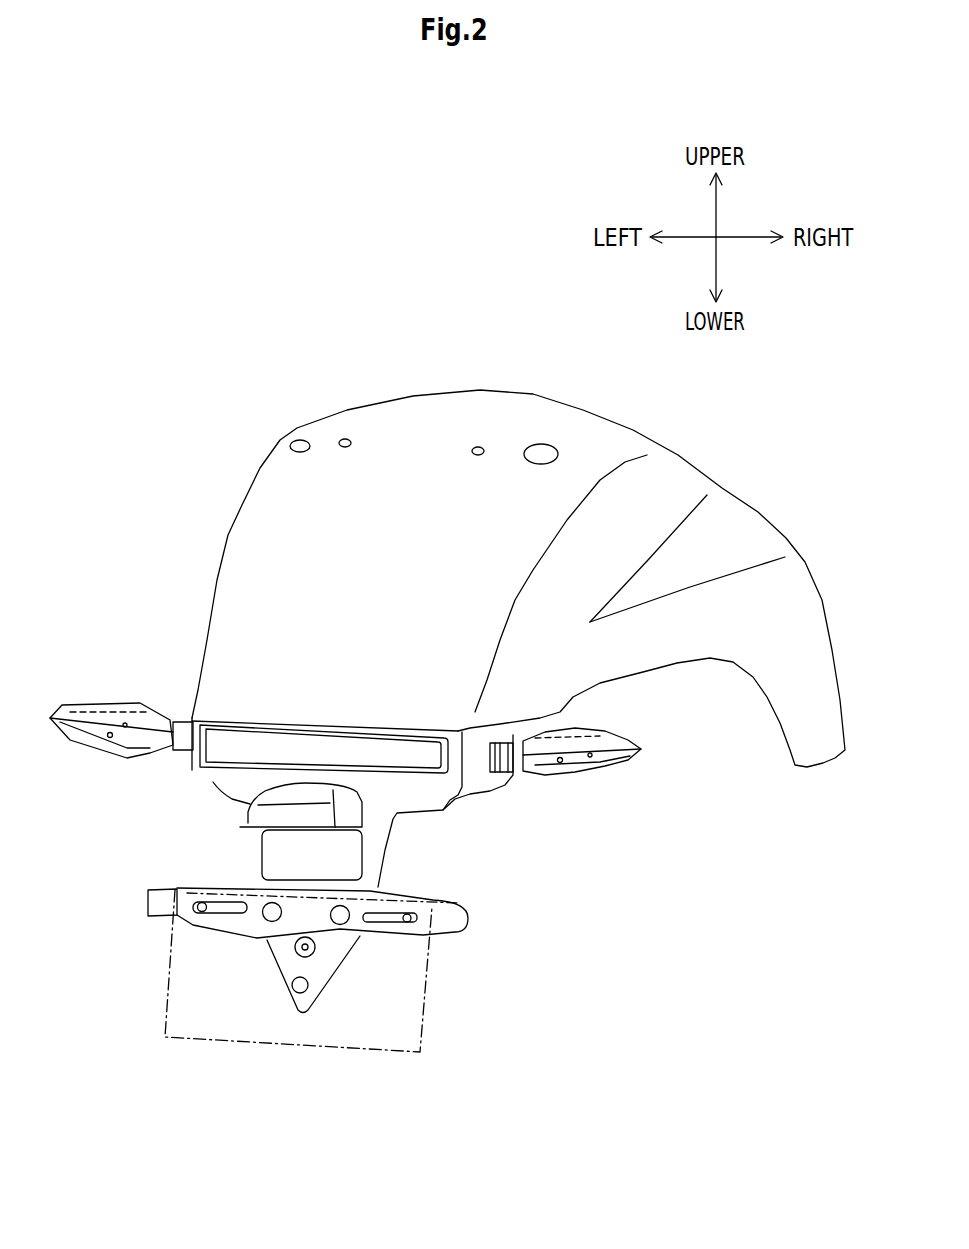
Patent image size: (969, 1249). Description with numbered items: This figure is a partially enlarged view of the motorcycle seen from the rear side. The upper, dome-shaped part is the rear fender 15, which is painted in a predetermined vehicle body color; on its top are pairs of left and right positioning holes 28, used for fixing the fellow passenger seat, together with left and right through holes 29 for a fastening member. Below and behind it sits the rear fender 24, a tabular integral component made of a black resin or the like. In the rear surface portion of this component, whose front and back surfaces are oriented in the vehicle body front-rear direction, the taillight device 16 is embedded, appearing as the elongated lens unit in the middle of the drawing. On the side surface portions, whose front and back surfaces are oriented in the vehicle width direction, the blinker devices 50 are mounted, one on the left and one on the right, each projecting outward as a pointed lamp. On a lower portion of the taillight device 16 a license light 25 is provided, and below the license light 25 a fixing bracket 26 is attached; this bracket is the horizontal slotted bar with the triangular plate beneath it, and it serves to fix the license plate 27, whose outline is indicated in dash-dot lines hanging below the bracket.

The rear fender 15 is at (245, 562).
The taillight device 16 is at (232, 752).
The rear fender 24 is at (477, 777).
The license light 25 is at (272, 812).
The fixing bracket 26 is at (160, 907).
The license plate 27 is at (168, 967).
The positioning holes 28 is at (300, 438).
The through holes 29 is at (346, 437).
The blinker devices 50 is at (92, 753).